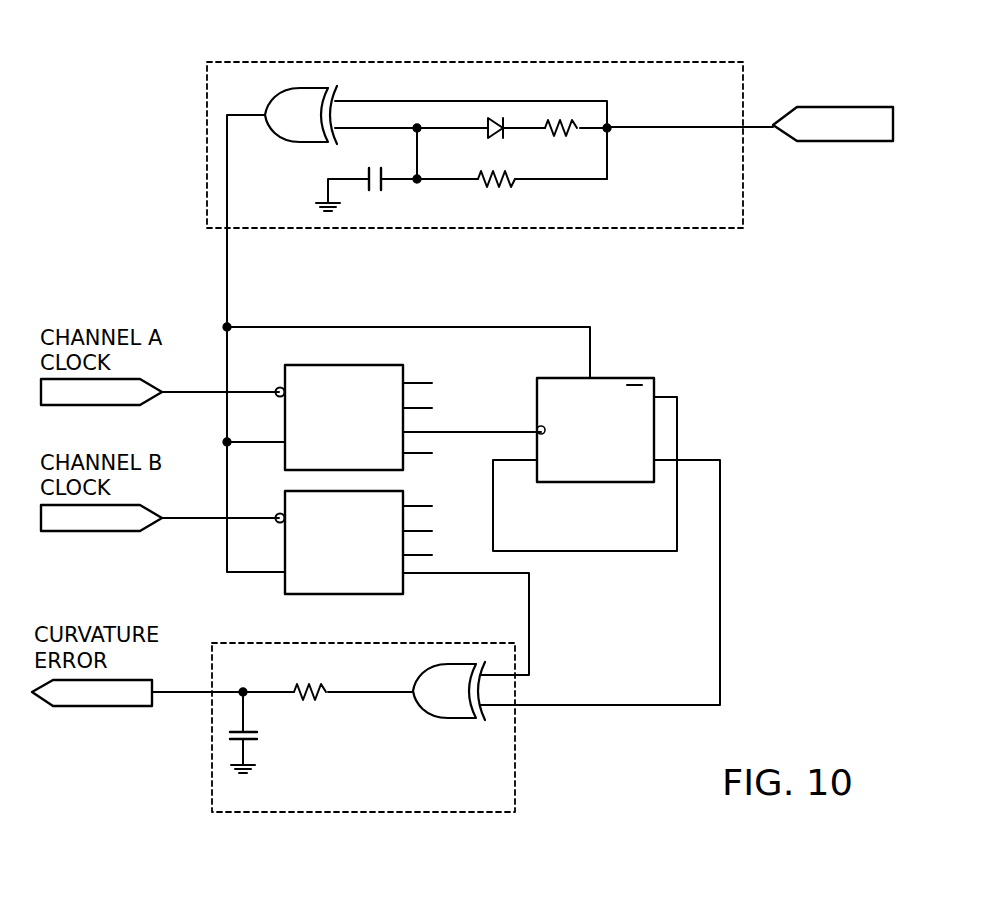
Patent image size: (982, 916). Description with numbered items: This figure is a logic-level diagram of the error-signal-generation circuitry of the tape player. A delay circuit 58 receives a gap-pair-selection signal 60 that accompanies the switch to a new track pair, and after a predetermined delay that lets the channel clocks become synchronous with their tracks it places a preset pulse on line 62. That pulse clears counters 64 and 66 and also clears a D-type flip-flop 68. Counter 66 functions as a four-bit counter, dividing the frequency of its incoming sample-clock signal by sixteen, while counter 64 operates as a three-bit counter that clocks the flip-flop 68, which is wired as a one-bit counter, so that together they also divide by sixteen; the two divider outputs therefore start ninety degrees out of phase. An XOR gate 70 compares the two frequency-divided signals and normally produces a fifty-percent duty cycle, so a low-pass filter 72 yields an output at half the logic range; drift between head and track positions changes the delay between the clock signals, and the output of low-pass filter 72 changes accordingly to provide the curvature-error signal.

The delay circuit 58 is at (437, 62).
The gap-pair-selection signal 60 is at (830, 106).
The line 62 is at (229, 272).
The counter 64 is at (390, 364).
The counter 66 is at (400, 490).
The D-type flip-flop 68 is at (618, 377).
The XOR gate 70 is at (446, 716).
The low-pass filter 72 is at (302, 656).